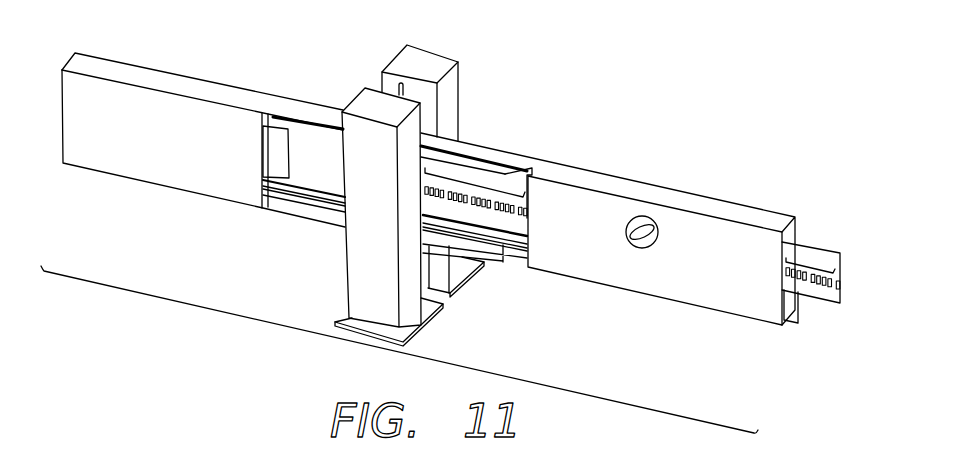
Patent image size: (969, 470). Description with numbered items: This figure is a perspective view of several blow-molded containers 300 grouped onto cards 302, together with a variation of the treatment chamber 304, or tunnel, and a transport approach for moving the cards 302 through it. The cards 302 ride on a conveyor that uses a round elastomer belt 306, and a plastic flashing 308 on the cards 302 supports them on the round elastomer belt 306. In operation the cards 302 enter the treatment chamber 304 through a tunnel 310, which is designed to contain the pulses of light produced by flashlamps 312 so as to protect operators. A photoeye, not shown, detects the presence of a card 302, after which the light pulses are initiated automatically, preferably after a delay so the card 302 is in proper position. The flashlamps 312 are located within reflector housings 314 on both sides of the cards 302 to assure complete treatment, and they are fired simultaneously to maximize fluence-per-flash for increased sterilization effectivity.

The blow-molded containers 300 is at (475, 178).
The cards 302 is at (289, 162).
The treatment chamber 304 is at (473, 82).
The round elastomer belt 306 is at (303, 194).
The plastic flashing 308 is at (263, 185).
The tunnel 310 is at (175, 84).
The flashlamps 312 is at (398, 88).
The reflector housings 314 is at (360, 105).